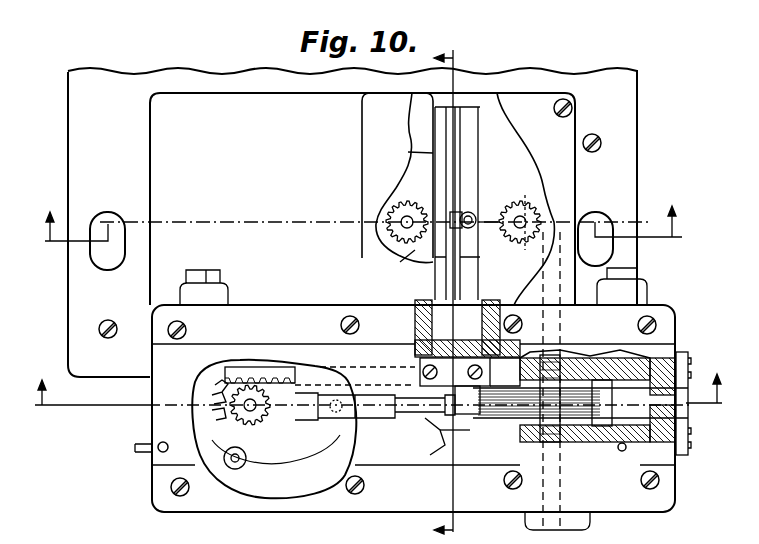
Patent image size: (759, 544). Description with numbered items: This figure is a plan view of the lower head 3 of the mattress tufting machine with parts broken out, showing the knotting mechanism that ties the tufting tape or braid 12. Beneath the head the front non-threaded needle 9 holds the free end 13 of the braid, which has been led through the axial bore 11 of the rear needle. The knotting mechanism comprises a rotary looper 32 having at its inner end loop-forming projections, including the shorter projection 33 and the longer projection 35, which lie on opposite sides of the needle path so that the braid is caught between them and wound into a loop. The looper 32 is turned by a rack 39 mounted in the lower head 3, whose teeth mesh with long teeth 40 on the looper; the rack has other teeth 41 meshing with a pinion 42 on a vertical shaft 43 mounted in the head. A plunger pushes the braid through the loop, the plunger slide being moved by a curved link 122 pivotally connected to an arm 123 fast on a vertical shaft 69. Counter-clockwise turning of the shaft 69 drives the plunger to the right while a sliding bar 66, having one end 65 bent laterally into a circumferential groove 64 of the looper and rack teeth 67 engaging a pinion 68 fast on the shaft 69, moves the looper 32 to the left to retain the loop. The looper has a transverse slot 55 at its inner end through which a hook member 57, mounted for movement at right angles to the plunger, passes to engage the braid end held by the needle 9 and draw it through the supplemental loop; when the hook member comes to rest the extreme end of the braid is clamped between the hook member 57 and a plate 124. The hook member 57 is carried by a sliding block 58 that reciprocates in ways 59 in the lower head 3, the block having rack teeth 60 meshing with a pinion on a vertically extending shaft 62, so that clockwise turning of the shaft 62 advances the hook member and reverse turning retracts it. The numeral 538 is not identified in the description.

The lower head 3 is at (624, 168).
The front non-threaded needle 9 is at (450, 440).
The axial bore 11 is at (376, 380).
The tufting tape or braid 12 is at (357, 214).
The free end of the braid 13 is at (424, 296).
The rotary looper 32 is at (585, 420).
The loop-forming projection 33 is at (420, 372).
The long loop-forming projection 35 is at (432, 428).
The rack 39 is at (528, 255).
The long teeth 40 is at (542, 440).
The rack teeth 41 is at (470, 205).
The pinion 42 is at (518, 205).
The vertical shaft 43 is at (528, 200).
The slot 55 is at (470, 410).
The hook member 57 is at (418, 332).
The sliding block 58 is at (404, 147).
The ways 59 is at (412, 118).
The rack teeth 60 is at (393, 262).
The vertically extending shaft 62 is at (405, 210).
The circumferential groove 64 is at (690, 450).
The bent end of the sliding bar 65 is at (622, 358).
The sliding bar 66 is at (280, 365).
The rack teeth 67 is at (248, 385).
The pinion 68 is at (215, 390).
The vertical shaft 69 is at (252, 410).
The curved link 122 is at (305, 478).
The arm 123 is at (246, 450).
The plate 124 is at (545, 352).
The clutch member 538 is at (435, 412).